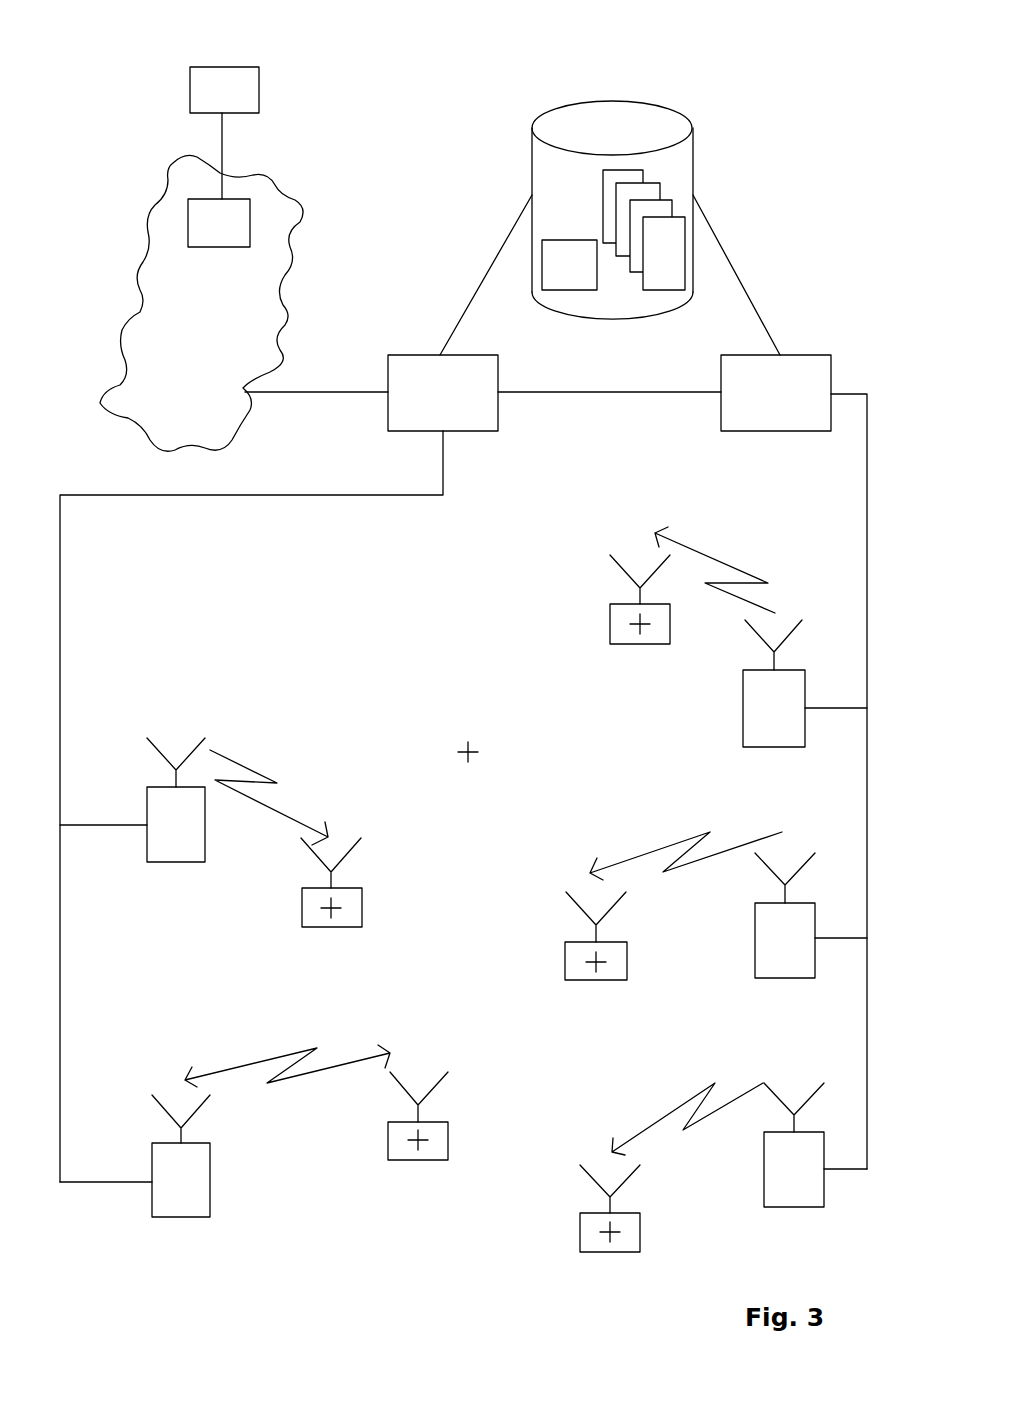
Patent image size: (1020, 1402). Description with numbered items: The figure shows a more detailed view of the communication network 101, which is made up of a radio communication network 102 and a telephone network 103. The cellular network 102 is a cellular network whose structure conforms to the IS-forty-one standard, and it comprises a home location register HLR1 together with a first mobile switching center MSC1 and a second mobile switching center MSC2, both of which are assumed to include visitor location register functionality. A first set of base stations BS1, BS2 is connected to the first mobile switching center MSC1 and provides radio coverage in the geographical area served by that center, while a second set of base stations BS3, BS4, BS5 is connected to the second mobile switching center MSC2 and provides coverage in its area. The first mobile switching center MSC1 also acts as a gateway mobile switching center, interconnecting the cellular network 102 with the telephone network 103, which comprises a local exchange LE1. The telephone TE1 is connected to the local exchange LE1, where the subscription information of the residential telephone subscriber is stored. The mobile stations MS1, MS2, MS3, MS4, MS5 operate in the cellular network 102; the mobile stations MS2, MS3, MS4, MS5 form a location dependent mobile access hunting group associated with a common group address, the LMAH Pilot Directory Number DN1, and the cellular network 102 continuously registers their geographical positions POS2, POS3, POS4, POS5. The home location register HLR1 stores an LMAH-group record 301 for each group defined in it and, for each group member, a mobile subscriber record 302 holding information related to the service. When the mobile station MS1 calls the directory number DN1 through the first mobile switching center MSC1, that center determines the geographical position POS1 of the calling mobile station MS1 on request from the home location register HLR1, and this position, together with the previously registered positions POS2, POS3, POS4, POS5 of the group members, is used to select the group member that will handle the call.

The communication network 101 is at (356, 78).
The radio communication network 102 is at (846, 138).
The telephone network 103 is at (110, 268).
The telephone TE1 is at (190, 97).
The local exchange LE1 is at (212, 247).
The home location register HLR1 is at (612, 100).
The LMAH Pilot Directory Number DN1 is at (570, 290).
The LMAH-group record 301 is at (569, 304).
The mobile subscriber record 302 is at (665, 290).
The first mobile switching center MSC1 is at (498, 408).
The second mobile switching center MSC2 is at (831, 377).
The base station BS1 is at (147, 845).
The base station BS2 is at (152, 1200).
The base station BS3 is at (770, 747).
The base station BS4 is at (785, 978).
The base station BS5 is at (795, 1207).
The mobile station MS1 is at (420, 1160).
The mobile station MS2 is at (333, 927).
The mobile station MS3 is at (610, 615).
The mobile station MS4 is at (595, 1252).
The mobile station MS5 is at (590, 980).
The geographical position POS1 is at (420, 1138).
The geographical position POS2 is at (333, 906).
The geographical position POS3 is at (643, 626).
The geographical position POS4 is at (612, 1230).
The geographical position POS5 is at (598, 960).